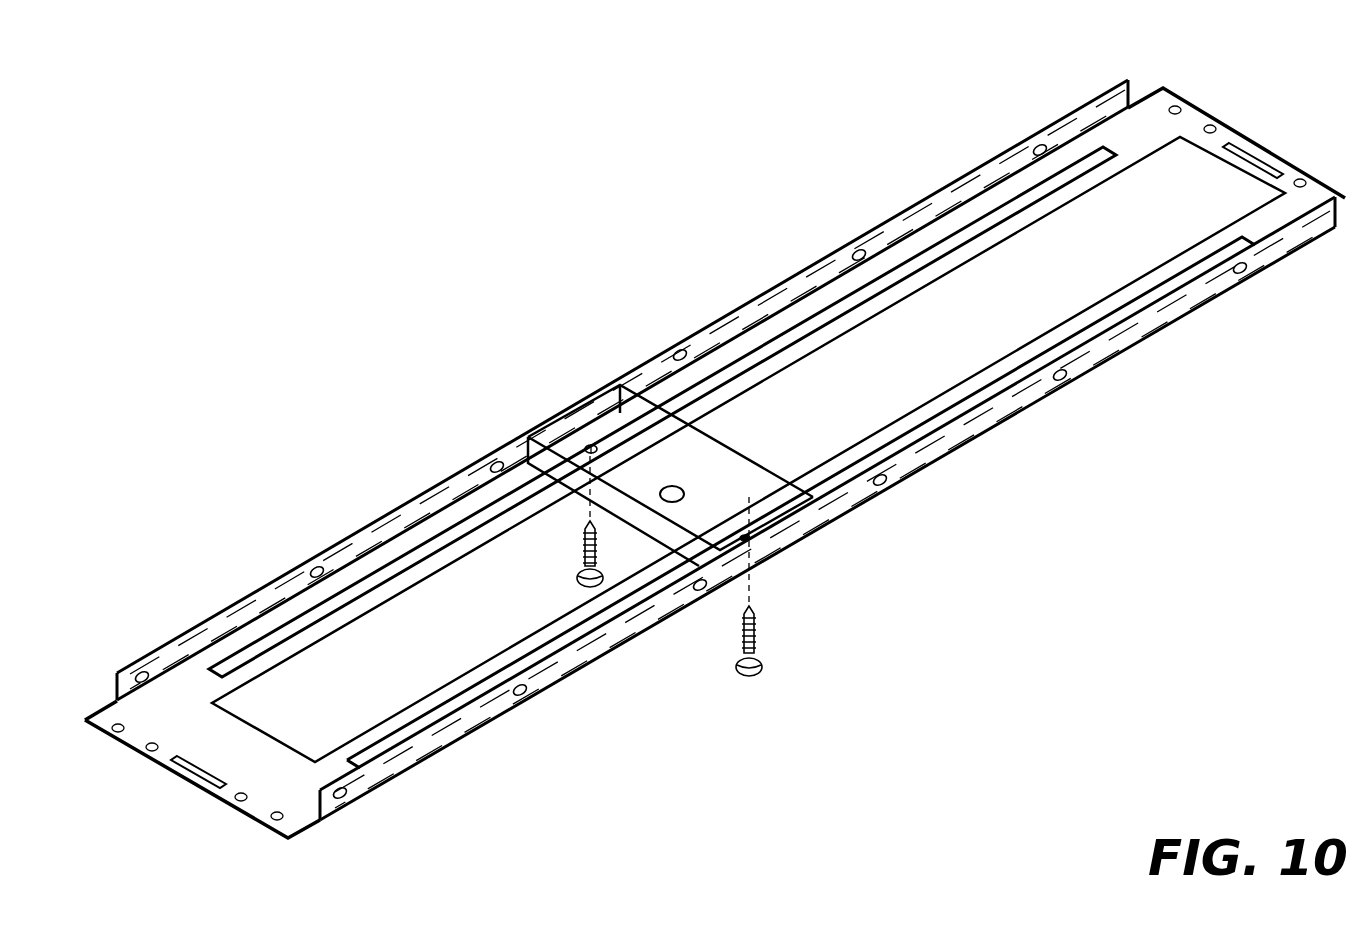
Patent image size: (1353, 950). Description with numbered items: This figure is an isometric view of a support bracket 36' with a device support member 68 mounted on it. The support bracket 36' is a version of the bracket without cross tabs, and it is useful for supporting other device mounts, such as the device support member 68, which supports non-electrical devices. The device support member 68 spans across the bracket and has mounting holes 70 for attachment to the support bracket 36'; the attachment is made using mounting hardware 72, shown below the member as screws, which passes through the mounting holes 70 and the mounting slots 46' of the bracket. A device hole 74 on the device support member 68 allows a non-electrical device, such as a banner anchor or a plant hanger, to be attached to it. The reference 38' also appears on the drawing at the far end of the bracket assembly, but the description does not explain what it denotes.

The base plate / tray 38' is at (715, 429).
The support bracket 36' is at (726, 450).
The mounting slots 46' is at (732, 457).
The device support member 68 is at (652, 525).
The mounting holes 70 is at (590, 440).
The mounting hardware 72 is at (580, 550).
The device hole 74 is at (683, 483).